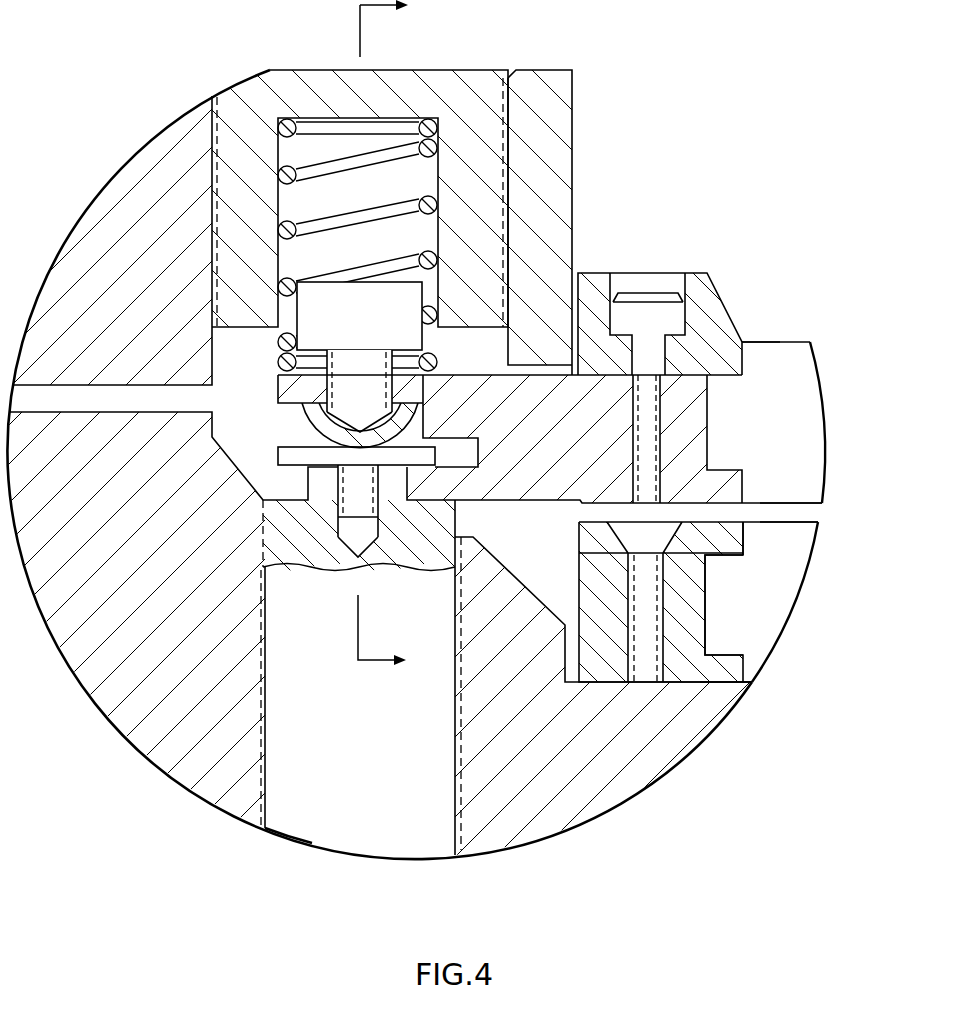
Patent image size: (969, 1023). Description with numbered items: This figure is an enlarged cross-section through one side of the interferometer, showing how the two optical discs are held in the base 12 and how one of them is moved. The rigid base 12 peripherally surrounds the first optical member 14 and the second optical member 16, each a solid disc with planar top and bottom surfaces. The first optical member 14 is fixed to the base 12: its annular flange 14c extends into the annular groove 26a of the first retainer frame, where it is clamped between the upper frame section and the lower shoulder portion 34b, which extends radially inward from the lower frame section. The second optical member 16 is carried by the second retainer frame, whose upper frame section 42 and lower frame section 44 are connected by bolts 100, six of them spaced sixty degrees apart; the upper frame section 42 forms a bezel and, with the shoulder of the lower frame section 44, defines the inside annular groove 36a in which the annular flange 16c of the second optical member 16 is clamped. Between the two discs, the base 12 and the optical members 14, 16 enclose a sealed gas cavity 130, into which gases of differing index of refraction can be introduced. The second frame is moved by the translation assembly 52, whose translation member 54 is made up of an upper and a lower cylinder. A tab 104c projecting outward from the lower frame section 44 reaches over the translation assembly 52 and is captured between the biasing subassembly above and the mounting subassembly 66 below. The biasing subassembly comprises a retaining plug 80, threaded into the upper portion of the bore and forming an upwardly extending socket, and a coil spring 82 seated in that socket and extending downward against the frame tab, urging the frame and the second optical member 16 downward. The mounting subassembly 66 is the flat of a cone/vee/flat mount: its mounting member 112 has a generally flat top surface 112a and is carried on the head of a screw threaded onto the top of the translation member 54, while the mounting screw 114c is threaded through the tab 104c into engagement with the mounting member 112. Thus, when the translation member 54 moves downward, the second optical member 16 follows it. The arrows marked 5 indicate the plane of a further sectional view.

The base 12 is at (83, 253).
The first optical member 14 is at (781, 632).
The annular flange 14c is at (727, 573).
The second optical member 16 is at (812, 380).
The annular flange 16c is at (730, 400).
The annular groove 26a is at (705, 617).
The lower shoulder portion 34b is at (733, 684).
The inside annular groove 36a is at (707, 432).
The upper frame section 42 is at (717, 308).
The lower frame section 44 is at (545, 488).
The translation assembly 52 is at (290, 835).
The translation member 54 is at (335, 805).
The mounting subassembly 66 is at (311, 530).
The retaining plug 80 is at (238, 112).
The coil spring 82 is at (433, 160).
The bolts 100 is at (641, 292).
The tab portion 104c is at (423, 393).
The mounting member 112 is at (367, 492).
The flat top surface 112a is at (278, 452).
The mounting screw 114c is at (337, 329).
The gas cavity 130 is at (810, 512).
The section line 5- 5 is at (395, 337).